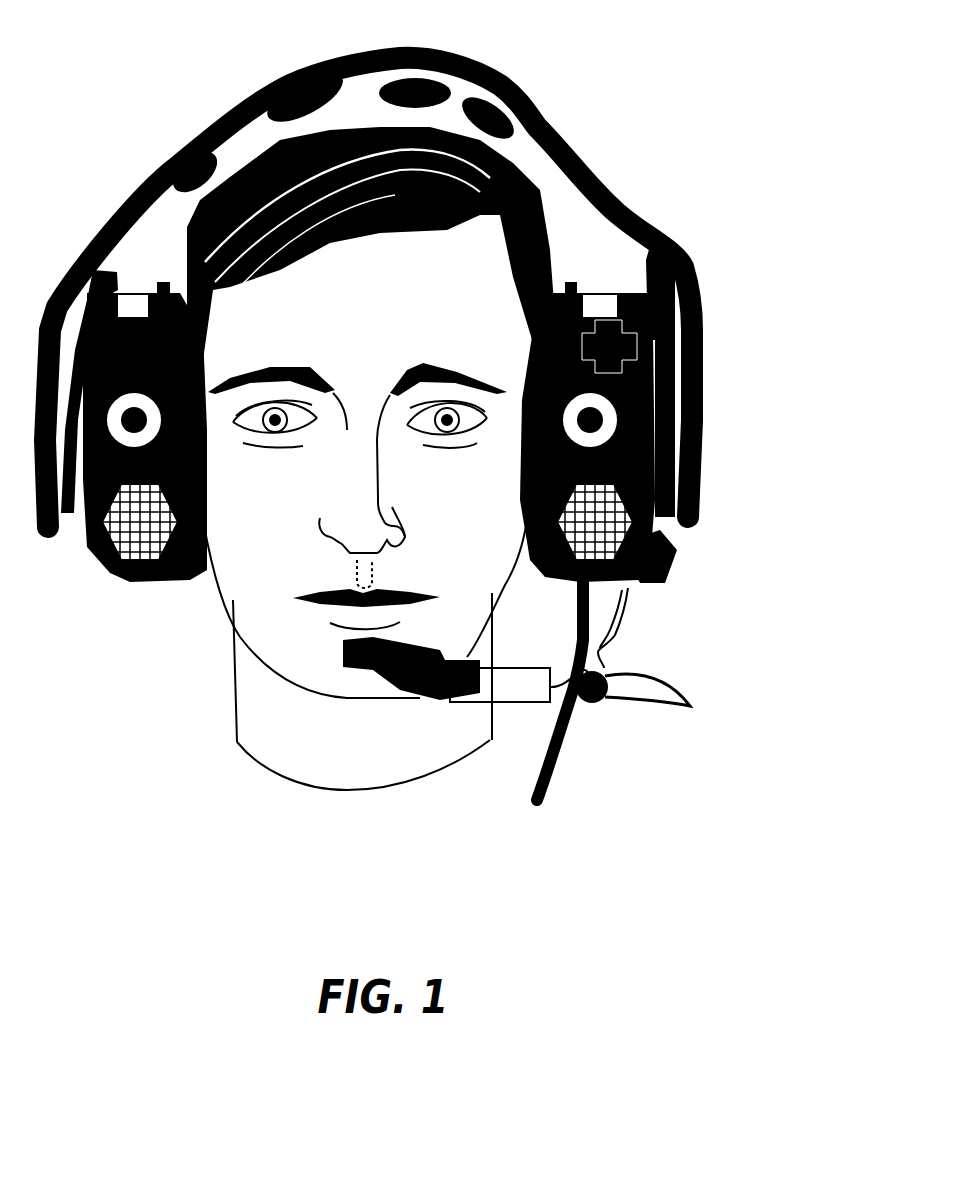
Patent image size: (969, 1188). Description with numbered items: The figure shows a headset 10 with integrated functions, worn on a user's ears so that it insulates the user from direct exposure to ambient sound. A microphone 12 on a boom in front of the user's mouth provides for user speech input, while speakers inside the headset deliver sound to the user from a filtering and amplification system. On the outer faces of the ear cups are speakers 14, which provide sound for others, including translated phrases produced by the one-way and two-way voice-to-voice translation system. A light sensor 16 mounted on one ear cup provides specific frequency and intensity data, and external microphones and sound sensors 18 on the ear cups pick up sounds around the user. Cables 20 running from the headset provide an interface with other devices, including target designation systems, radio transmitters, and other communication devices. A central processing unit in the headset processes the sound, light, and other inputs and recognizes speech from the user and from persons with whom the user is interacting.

The headset 10 is at (674, 110).
The microphone 12 is at (390, 670).
The speakers 14 is at (129, 582).
The light sensor 16 is at (664, 373).
The external microphones and sound sensors 18 is at (179, 456).
The cables 20 is at (543, 780).